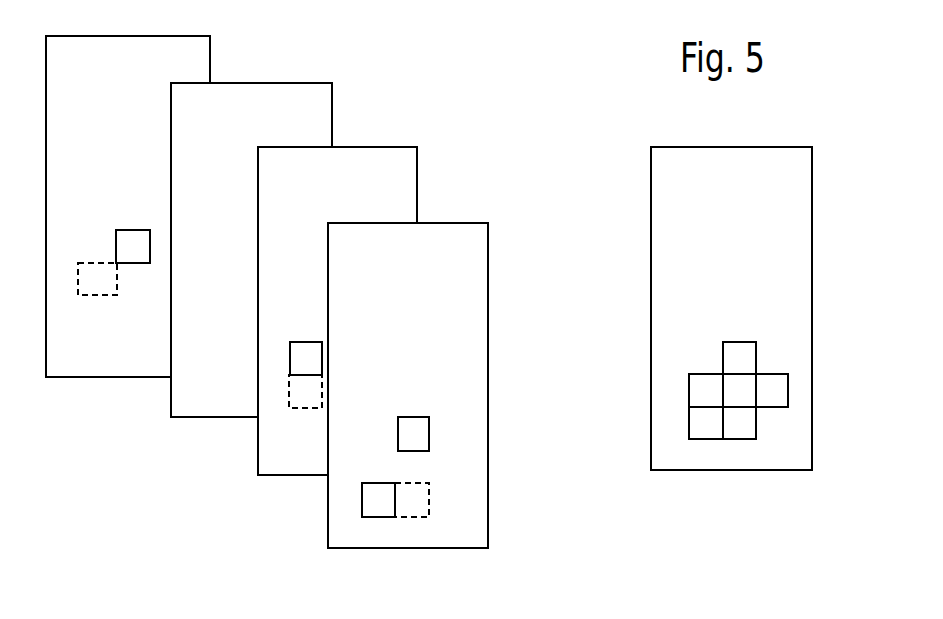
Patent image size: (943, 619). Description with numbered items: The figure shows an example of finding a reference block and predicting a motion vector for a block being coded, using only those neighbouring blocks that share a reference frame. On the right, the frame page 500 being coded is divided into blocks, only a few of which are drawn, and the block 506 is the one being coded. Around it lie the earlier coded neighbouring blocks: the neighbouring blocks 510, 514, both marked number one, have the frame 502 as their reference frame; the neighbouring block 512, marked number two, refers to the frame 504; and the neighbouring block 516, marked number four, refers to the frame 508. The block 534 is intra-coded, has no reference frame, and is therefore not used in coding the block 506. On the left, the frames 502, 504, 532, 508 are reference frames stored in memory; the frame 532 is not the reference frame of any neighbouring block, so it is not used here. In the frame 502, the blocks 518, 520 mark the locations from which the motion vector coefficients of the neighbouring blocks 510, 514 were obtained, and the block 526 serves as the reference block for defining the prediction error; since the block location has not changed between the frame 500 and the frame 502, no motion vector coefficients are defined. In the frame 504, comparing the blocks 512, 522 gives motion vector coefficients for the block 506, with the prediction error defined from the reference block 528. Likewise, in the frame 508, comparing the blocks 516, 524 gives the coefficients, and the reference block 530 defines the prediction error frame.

The frame page being coded 500 is at (812, 253).
The reference frame 502 is at (489, 330).
The reference frame 504 is at (418, 185).
The block being coded 506 is at (756, 415).
The reference frame 508 is at (212, 72).
The neighbouring block 510 is at (708, 440).
The neighbouring block 512 is at (728, 390).
The neighbouring block 514 is at (735, 342).
The neighbouring block 516 is at (770, 375).
The block in reference frame 518 is at (383, 518).
The block in reference frame 520 is at (408, 418).
The block in reference frame 522 is at (290, 367).
The block in reference frame 524 is at (136, 230).
The reference block 526 is at (430, 513).
The reference block 528 is at (299, 409).
The reference block 530 is at (90, 296).
The reference frame 532 is at (333, 123).
The intra-coded block 534 is at (689, 390).